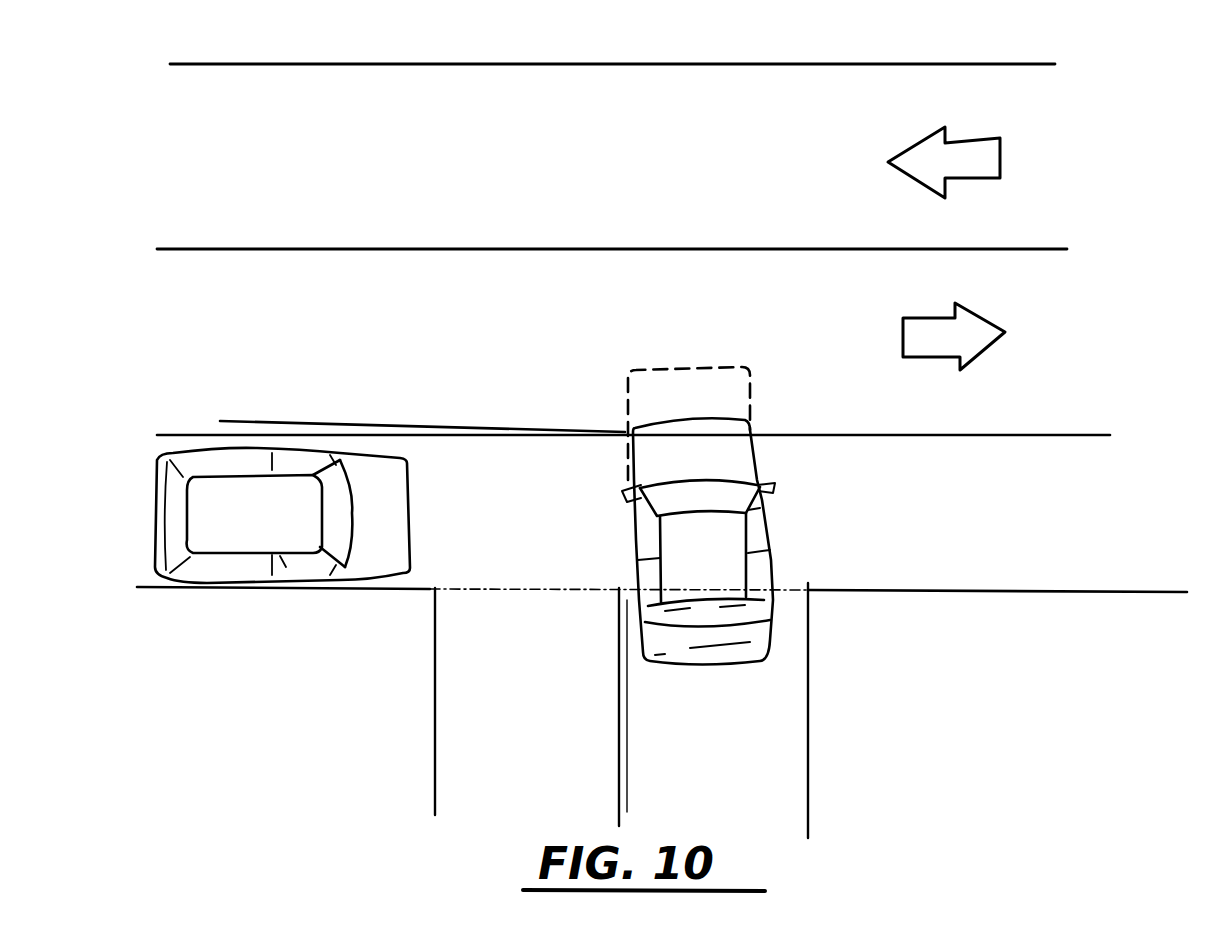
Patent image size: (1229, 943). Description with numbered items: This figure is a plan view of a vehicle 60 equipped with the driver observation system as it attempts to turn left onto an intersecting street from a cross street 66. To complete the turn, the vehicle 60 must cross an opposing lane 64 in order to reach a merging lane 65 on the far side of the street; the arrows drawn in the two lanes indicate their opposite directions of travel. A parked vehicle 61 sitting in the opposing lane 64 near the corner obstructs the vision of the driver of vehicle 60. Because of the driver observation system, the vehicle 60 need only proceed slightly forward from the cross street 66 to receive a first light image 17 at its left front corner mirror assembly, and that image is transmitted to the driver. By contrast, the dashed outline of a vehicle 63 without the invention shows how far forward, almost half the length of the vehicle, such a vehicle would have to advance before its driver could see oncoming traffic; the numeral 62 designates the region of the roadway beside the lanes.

The first light image 17 is at (403, 420).
The vehicle 60 is at (697, 666).
The parked vehicle 61 is at (356, 582).
The right-hand traffic lane 62 is at (1028, 540).
The vehicle without the invention 63 is at (671, 366).
The opposing lane 64 is at (320, 355).
The merging lane 65 is at (590, 188).
The cross street 66 is at (748, 766).